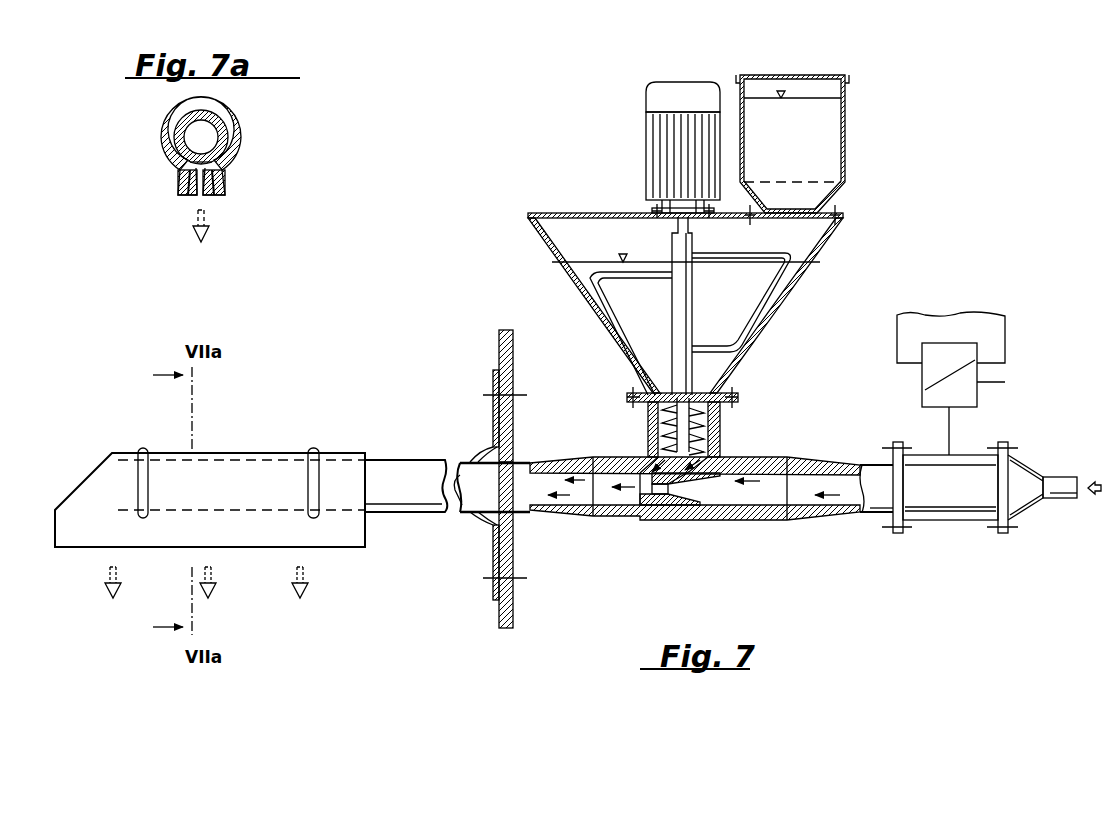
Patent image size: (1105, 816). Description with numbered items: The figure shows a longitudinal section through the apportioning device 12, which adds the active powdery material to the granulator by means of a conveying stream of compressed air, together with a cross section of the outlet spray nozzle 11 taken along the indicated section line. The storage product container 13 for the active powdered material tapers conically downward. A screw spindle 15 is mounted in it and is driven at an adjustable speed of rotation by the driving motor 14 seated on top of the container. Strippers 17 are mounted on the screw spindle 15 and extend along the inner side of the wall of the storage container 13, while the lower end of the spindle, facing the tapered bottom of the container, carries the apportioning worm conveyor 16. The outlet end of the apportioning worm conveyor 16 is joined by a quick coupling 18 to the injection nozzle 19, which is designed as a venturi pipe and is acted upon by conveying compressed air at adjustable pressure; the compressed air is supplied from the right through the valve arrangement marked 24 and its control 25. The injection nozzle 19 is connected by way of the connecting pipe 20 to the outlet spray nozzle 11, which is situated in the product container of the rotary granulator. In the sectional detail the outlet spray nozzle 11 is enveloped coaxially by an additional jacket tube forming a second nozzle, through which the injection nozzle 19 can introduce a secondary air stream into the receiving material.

In FIG. 7A, the outlet spray nozzle 11 is at (182, 174).
In FIG. 7, the outlet spray nozzle 11 is at (92, 525).
In FIG. 7, the apportioning device 12 is at (455, 268).
In FIG. 7, the storage product container 13 is at (588, 232).
In FIG. 7, the driving motor 14 is at (657, 135).
In FIG. 7, the screw spindle 15 is at (683, 302).
In FIG. 7, the apportioning worm conveyor 16 is at (670, 433).
In FIG. 7, the strippers 17 is at (618, 322).
In FIG. 7, the quick coupling 18 is at (748, 398).
In FIG. 7, the injection nozzle 19 is at (707, 490).
In FIG. 7A, the connecting pipe 20 is at (225, 138).
In FIG. 7, the connecting pipe 20 is at (415, 490).
In FIG. 7, the valve 24 is at (968, 538).
In FIG. 7, the control unit 25 is at (1027, 345).